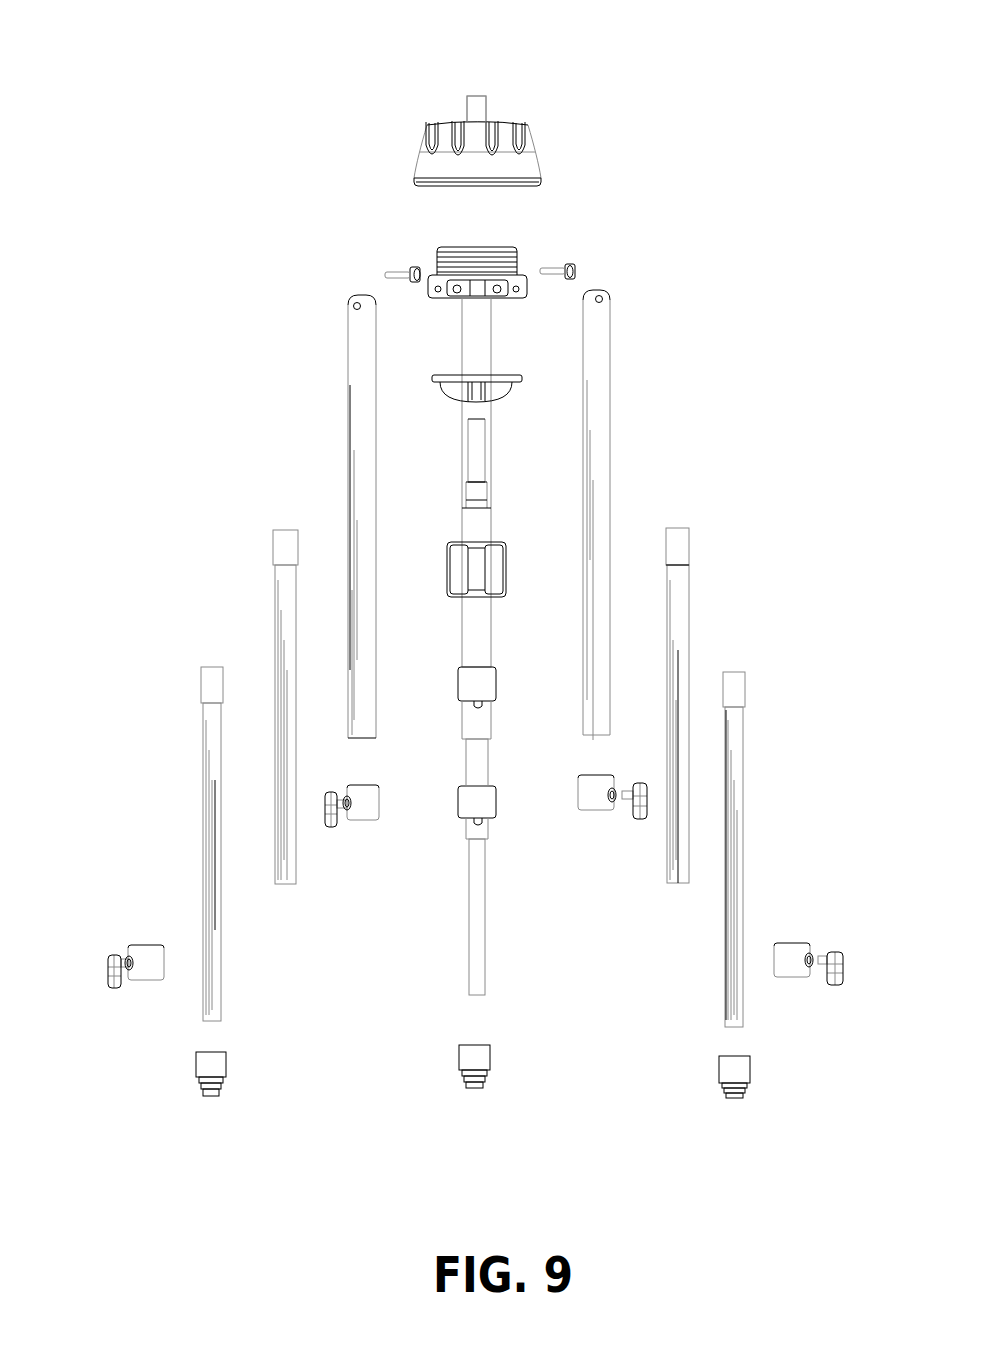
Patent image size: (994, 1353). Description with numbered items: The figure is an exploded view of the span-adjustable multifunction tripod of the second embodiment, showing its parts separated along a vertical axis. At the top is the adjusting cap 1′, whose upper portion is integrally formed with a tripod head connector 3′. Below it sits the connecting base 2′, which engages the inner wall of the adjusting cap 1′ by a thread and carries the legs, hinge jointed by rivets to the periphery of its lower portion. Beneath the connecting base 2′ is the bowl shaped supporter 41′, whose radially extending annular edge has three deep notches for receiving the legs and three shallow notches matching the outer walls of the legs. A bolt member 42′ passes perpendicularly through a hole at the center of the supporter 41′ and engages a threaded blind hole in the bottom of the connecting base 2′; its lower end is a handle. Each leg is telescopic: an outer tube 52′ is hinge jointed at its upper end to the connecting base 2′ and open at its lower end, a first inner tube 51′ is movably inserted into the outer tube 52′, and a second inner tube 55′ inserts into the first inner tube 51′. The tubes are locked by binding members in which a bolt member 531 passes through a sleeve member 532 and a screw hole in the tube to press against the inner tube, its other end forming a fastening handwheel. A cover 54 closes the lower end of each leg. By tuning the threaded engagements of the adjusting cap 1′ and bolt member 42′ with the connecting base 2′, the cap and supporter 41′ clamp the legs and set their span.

The adjusting cap 1′ is at (418, 168).
The tripod head connector 3′ is at (485, 97).
The connecting base 2′ is at (517, 276).
The bowl shaped supporter 41′ is at (432, 376).
The bolt member 42′ is at (507, 545).
The outer tube 52′ is at (340, 502).
The first inner tube 51′ is at (282, 667).
The second inner tube 55′ is at (211, 857).
The sleeve member 532 is at (348, 788).
The bolt member 531 is at (648, 800).
The cover 54 is at (740, 1067).